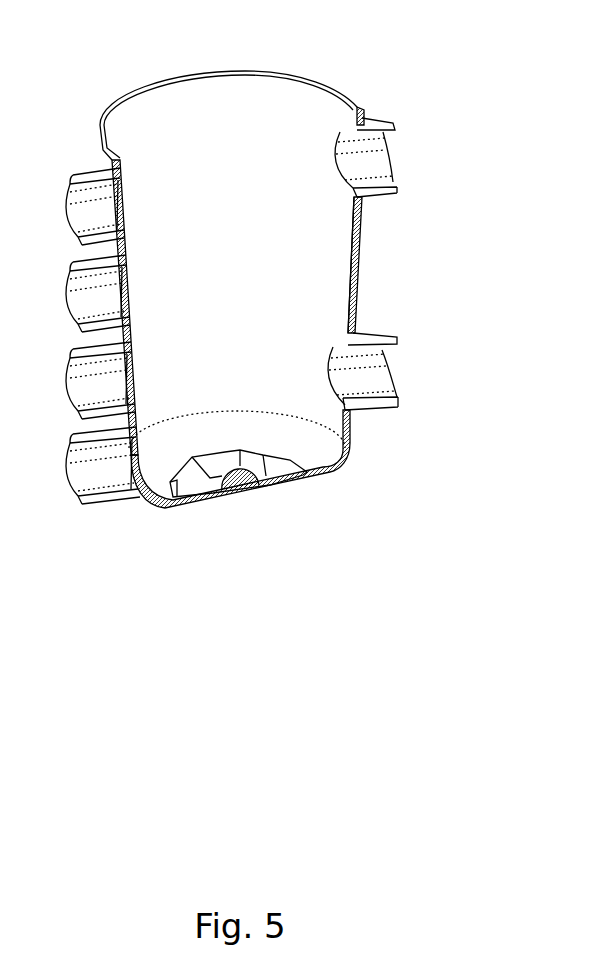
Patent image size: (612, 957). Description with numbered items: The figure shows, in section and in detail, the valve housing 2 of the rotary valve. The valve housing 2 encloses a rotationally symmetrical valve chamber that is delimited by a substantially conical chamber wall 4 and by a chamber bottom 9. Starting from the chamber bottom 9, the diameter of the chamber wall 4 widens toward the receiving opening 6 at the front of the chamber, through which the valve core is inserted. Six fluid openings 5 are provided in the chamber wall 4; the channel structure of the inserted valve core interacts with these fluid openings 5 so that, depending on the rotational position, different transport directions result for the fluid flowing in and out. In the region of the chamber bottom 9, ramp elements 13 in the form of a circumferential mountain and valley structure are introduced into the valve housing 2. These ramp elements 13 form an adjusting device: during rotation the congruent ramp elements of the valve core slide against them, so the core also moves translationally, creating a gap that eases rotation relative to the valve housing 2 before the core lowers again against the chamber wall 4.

The receiving opening 6 is at (303, 107).
The valve housing 2 is at (355, 252).
The chamber wall 4 is at (353, 313).
The fluid openings 5 is at (365, 162).
The chamber bottom 9 is at (318, 456).
The ramp elements 13 is at (192, 472).